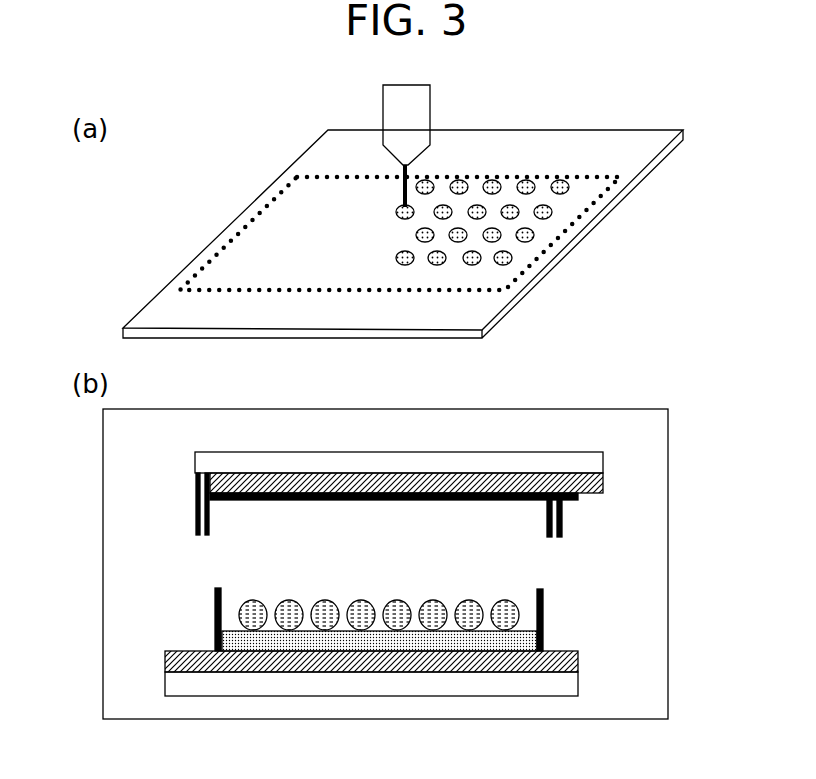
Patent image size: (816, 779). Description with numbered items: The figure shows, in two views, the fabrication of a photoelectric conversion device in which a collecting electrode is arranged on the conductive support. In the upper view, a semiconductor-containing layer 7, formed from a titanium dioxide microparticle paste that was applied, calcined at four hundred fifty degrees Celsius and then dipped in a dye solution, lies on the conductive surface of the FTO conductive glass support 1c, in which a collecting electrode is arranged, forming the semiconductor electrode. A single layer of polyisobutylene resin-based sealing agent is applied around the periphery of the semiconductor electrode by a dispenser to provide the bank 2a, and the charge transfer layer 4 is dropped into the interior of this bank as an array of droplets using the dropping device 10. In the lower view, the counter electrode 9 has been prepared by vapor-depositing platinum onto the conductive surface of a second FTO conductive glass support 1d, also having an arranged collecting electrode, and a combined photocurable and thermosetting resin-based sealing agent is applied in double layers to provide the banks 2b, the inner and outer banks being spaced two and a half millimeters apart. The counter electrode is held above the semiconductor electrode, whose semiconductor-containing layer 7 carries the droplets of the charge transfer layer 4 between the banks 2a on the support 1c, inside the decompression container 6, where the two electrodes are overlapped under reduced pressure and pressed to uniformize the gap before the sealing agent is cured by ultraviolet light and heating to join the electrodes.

The conductive support in which a collecting electrode is arranged 1c is at (540, 283).
The conductive support in which a collecting electrode is arranged 1d is at (603, 480).
The bank of sealing agent 2a is at (553, 248).
The bank of sealing agent 2b is at (196, 525).
The charge transfer layer 4 is at (543, 212).
The decompression container 6 is at (663, 490).
The semiconductor-containing layer 7 is at (597, 150).
The counter electrode 9 is at (195, 498).
The dropping device 10 is at (430, 94).